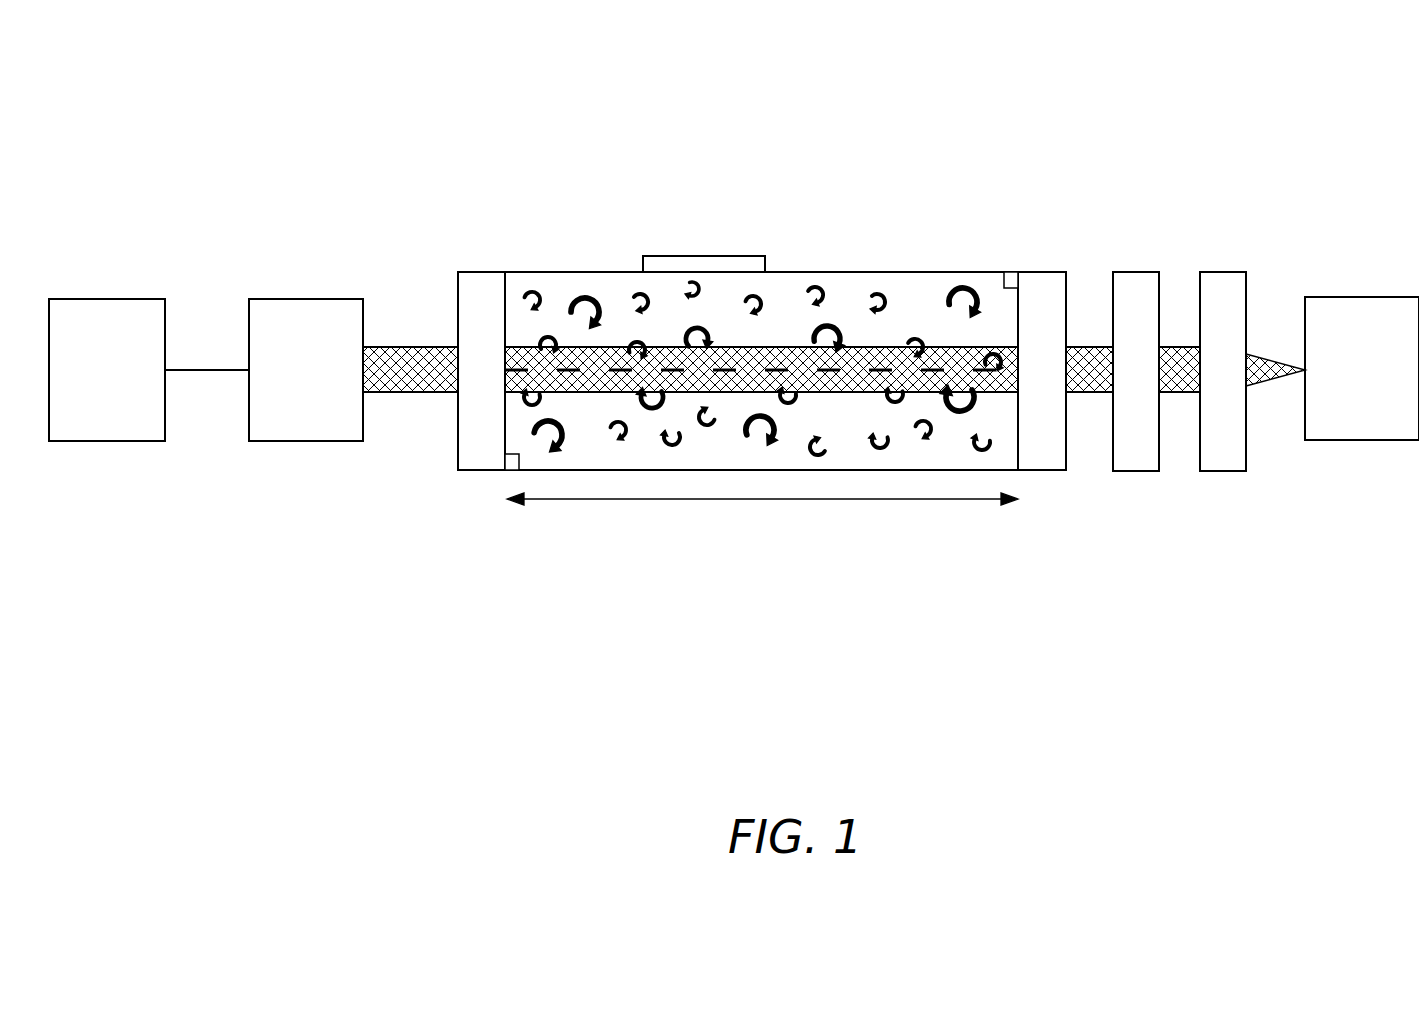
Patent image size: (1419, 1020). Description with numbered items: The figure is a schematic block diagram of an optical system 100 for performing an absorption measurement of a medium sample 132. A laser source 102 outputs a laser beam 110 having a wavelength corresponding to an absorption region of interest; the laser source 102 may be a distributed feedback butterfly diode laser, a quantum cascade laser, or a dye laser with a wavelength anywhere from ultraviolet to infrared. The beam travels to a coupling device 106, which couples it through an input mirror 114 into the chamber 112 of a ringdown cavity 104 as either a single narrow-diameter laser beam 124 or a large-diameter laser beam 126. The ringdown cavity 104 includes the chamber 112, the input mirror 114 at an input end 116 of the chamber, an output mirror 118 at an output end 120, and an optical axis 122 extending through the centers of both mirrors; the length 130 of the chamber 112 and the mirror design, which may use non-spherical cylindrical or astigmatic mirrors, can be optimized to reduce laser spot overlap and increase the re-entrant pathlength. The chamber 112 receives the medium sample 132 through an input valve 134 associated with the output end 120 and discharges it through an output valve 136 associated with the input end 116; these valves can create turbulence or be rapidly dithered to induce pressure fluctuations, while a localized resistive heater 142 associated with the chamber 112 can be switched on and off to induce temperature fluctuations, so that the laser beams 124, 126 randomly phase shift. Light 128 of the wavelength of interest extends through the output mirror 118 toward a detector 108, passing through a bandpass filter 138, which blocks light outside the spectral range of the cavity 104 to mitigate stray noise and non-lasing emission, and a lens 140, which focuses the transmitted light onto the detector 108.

The optical system 100 is at (321, 119).
The laser source 102 is at (126, 298).
The ringdown cavity 104 is at (761, 358).
The coupling device 106 is at (333, 298).
The detector 108 is at (1343, 296).
The laser beam 110 is at (213, 372).
The chamber 112 is at (588, 282).
The input mirror 114 is at (470, 270).
The input end 116 is at (512, 292).
The output mirror 118 is at (1030, 470).
The output end 120 is at (1018, 306).
The optical axis 122 is at (867, 365).
The single narrow-diameter laser beam 124 is at (394, 346).
The large-diameter laser beam 126 is at (413, 393).
The light 128 is at (1084, 346).
The length 130 is at (688, 501).
The medium sample 132 is at (857, 425).
The input valve 134 is at (1006, 270).
The output valve 136 is at (511, 471).
The bandpass filter 138 is at (1138, 270).
The lens 140 is at (1220, 270).
The localized resistive heater 142 is at (662, 256).